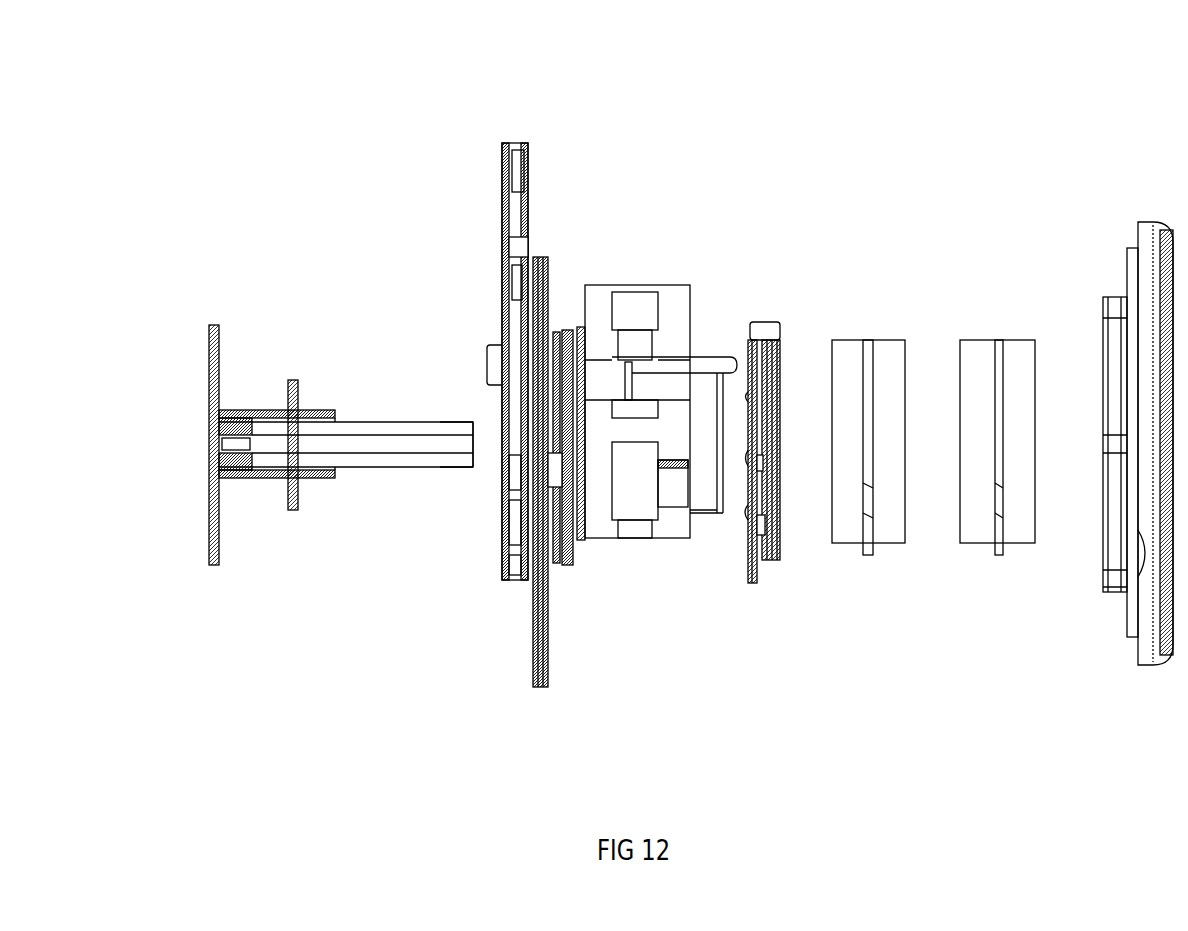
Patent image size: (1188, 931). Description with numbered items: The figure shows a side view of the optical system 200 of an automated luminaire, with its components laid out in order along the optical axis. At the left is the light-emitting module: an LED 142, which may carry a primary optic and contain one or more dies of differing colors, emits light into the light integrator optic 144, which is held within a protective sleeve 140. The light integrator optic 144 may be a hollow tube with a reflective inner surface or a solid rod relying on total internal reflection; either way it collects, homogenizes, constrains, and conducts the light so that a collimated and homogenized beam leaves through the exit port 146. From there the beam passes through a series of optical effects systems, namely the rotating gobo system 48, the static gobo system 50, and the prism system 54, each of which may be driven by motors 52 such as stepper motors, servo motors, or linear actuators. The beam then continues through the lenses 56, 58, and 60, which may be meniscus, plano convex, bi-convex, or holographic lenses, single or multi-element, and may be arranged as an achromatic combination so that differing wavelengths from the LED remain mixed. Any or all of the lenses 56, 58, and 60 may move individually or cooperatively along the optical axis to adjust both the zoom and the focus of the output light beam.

The optical system 200 is at (578, 90).
The LED 142 is at (208, 418).
The protective sleeve 140 is at (388, 428).
The light integrator optic 144 is at (247, 478).
The exit port 146 is at (474, 450).
The rotating gobo system 48 is at (508, 580).
The static gobo system 50 is at (541, 680).
The motors 52 is at (637, 556).
The prism system 54 is at (770, 553).
The lens 56 is at (847, 357).
The lens 58 is at (975, 357).
The lens 60 is at (1112, 590).